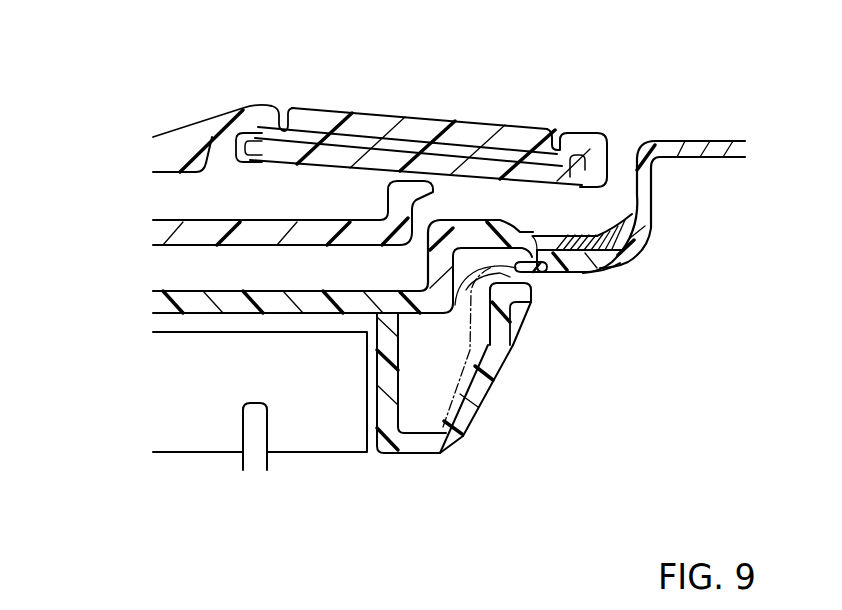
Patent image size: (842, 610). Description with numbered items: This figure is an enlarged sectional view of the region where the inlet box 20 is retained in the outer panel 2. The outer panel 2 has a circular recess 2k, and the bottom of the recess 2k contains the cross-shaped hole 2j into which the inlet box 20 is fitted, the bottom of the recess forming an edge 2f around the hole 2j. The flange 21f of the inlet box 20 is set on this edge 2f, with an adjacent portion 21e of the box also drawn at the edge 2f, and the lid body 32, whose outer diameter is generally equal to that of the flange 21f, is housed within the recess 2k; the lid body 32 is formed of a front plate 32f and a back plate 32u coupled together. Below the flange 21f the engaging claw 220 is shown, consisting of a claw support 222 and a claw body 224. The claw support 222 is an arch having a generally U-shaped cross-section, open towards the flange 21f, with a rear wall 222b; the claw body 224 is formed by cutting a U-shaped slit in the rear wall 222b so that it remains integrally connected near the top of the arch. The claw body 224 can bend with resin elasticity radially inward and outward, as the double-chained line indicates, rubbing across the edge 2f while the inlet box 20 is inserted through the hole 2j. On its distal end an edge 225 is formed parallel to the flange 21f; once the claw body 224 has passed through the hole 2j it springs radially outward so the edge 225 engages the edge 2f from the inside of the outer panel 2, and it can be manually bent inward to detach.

The outer panel 2 is at (682, 140).
The edge around the hole 2f is at (550, 272).
The cross-shaped hole 2j is at (478, 306).
The circular recess 2k is at (638, 192).
The inlet box 20 is at (148, 302).
The seal portion 21e is at (603, 247).
The flange 21f is at (483, 259).
The lid body 32 is at (368, 101).
The front plate 32f is at (213, 128).
The back plate 32u is at (268, 230).
The engaging claw 220 is at (506, 425).
The claw support 222 is at (386, 412).
The rear wall 222b is at (441, 450).
The claw body 224 is at (492, 403).
The edge 225 is at (553, 290).